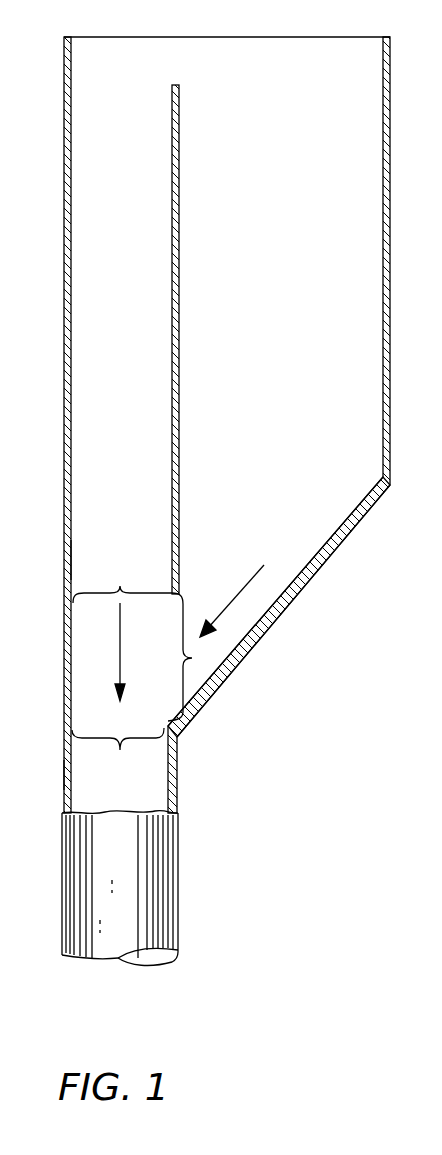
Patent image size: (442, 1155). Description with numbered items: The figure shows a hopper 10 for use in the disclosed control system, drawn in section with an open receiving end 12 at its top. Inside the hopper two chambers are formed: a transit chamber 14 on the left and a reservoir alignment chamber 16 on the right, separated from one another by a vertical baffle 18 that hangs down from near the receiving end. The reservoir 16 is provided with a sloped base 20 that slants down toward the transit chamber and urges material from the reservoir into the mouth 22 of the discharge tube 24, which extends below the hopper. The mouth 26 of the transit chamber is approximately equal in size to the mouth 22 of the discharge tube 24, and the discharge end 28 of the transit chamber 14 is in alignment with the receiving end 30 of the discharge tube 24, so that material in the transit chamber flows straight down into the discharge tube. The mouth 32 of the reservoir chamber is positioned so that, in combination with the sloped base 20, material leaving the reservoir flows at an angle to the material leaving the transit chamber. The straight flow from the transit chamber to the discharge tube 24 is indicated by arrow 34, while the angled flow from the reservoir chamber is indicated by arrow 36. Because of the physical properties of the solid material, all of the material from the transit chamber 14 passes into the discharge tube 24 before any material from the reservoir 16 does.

The hopper 10 is at (396, 366).
The receiving end 12 is at (248, 33).
The transit chamber 14 is at (100, 260).
The reservoir alignment chamber 16 is at (362, 229).
The baffle 18 is at (178, 437).
The sloped base 20 is at (302, 590).
The mouth of the discharge tube 22 is at (121, 754).
The discharge tube 24 is at (178, 878).
The mouth of the transit chamber 26 is at (120, 588).
The discharge end of the transit chamber 28 is at (63, 553).
The receiving end of the discharge tube 30 is at (63, 770).
The mouth of the reservoir chamber 32 is at (193, 657).
The arrow 34 is at (121, 666).
The arrow 36 is at (250, 578).